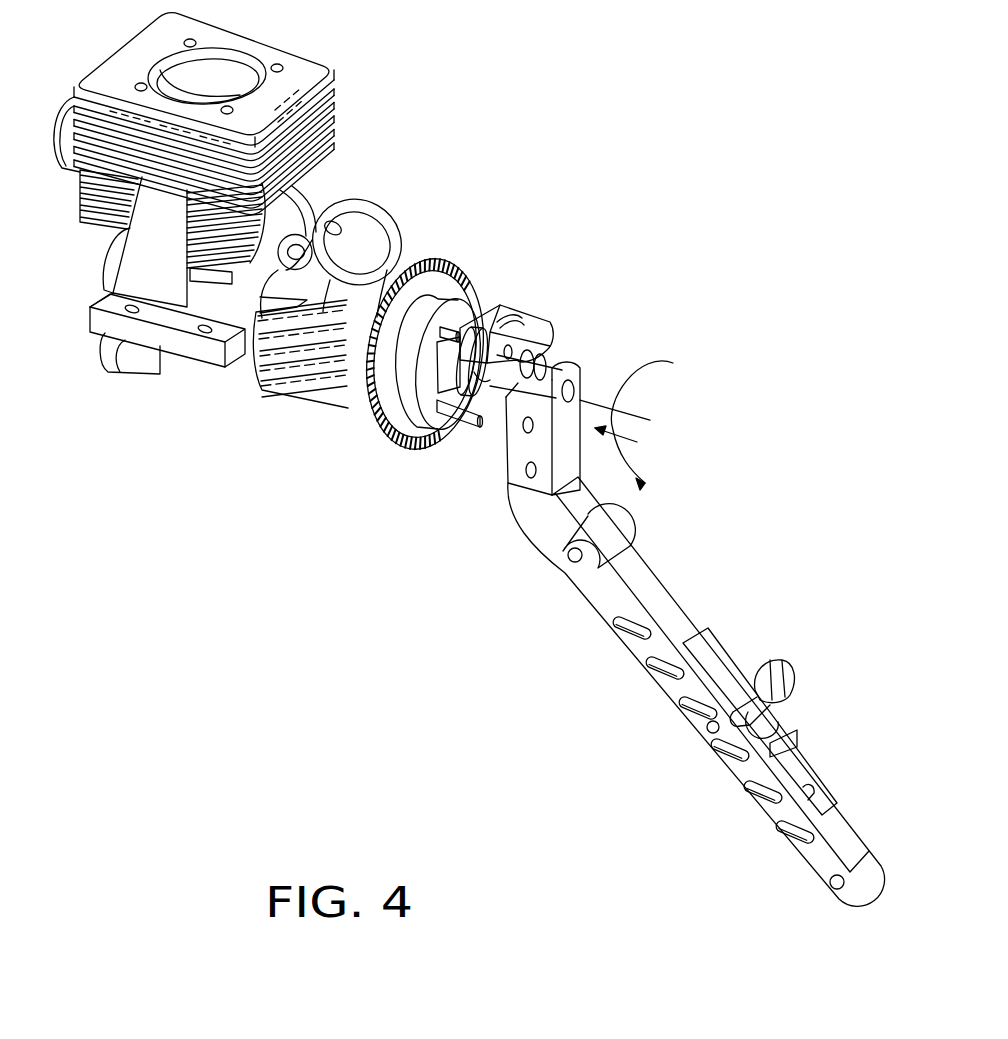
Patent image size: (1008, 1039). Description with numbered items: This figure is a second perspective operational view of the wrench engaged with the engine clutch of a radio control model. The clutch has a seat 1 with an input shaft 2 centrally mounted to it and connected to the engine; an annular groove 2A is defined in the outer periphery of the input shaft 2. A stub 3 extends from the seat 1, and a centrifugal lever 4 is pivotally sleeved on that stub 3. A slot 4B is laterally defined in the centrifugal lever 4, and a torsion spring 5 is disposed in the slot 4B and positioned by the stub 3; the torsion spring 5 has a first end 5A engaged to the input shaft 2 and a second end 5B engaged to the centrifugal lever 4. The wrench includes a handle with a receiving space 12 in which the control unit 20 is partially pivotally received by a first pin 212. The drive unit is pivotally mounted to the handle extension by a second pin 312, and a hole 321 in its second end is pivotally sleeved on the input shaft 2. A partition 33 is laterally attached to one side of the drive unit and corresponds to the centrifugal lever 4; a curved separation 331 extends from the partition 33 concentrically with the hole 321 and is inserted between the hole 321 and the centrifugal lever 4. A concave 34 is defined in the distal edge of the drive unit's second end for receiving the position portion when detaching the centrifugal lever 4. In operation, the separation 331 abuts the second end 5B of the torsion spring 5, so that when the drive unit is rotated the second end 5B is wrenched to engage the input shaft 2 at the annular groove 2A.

The seat 1 is at (345, 403).
The input shaft 2 is at (373, 432).
The annular groove 2A is at (400, 448).
The stub 3 is at (448, 332).
The centrifugal lever 4 is at (530, 327).
The slot 4B is at (508, 315).
The torsion spring 5 is at (480, 328).
The first end 5A is at (478, 375).
The second end 5B is at (503, 320).
The receiving space 12 is at (698, 642).
The control unit 20 is at (757, 632).
The first pin 212 is at (712, 728).
The partition 33 is at (527, 448).
The curved separation 331 is at (525, 393).
The concave 34 is at (527, 357).
The second pin 312 is at (575, 557).
The hole 321 is at (563, 381).